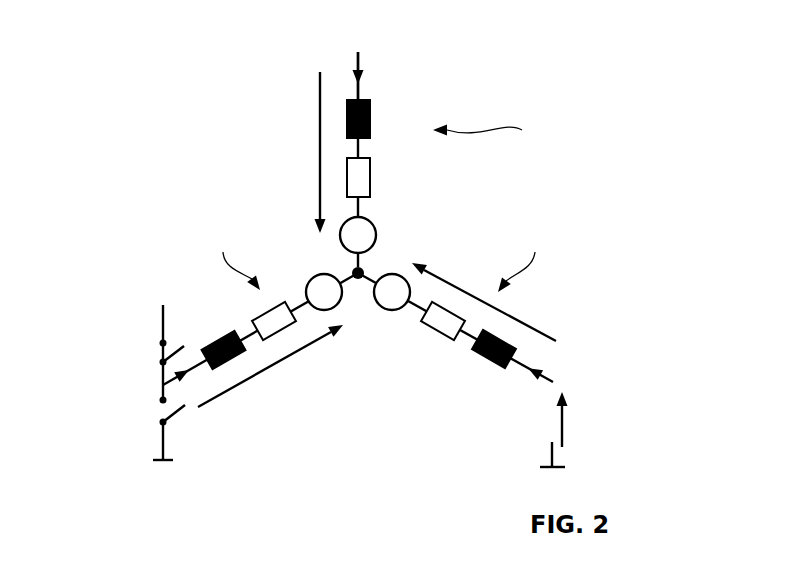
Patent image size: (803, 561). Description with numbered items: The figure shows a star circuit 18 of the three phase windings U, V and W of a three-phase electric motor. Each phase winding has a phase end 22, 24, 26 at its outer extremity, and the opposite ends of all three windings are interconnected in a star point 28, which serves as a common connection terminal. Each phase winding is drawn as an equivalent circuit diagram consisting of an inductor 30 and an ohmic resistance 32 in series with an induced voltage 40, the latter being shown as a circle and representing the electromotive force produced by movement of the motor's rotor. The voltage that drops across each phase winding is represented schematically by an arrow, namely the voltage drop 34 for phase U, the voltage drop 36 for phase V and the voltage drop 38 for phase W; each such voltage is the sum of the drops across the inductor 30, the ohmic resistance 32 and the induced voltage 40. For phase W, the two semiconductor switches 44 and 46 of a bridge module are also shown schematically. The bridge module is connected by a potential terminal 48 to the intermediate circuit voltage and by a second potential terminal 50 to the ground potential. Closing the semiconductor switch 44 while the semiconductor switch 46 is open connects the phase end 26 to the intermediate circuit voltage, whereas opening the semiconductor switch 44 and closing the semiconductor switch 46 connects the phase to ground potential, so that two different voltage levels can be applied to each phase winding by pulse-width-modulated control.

The star circuit 18 is at (128, 65).
The phase end 22 is at (362, 62).
The phase end 24 is at (552, 370).
The phase end 26 is at (170, 380).
The star point 28 is at (364, 270).
The inductor 30 is at (372, 118).
The ohmic resistance 32 is at (372, 180).
The voltage drop 34 is at (318, 148).
The voltage drop 36 is at (522, 320).
The voltage drop 38 is at (265, 368).
The induced voltage 40 is at (376, 236).
The semiconductor switch 44 is at (163, 352).
The semiconductor switch 46 is at (163, 410).
The potential terminal 48 is at (163, 313).
The second potential terminal 50 is at (170, 462).